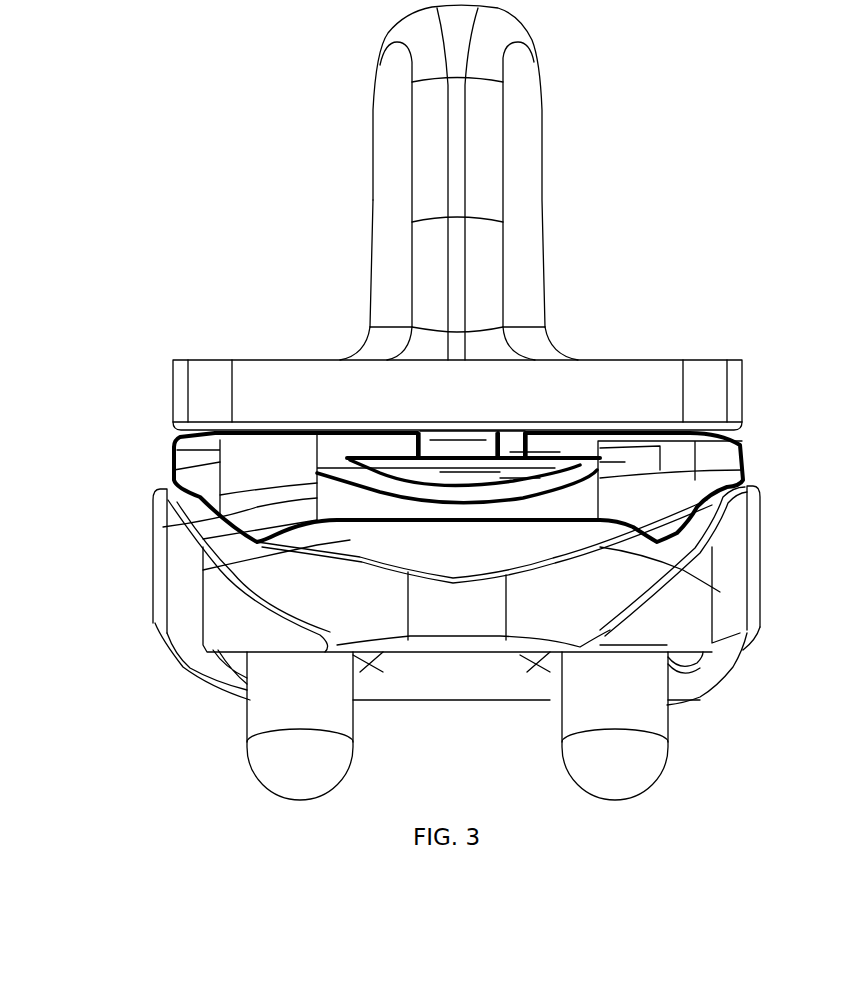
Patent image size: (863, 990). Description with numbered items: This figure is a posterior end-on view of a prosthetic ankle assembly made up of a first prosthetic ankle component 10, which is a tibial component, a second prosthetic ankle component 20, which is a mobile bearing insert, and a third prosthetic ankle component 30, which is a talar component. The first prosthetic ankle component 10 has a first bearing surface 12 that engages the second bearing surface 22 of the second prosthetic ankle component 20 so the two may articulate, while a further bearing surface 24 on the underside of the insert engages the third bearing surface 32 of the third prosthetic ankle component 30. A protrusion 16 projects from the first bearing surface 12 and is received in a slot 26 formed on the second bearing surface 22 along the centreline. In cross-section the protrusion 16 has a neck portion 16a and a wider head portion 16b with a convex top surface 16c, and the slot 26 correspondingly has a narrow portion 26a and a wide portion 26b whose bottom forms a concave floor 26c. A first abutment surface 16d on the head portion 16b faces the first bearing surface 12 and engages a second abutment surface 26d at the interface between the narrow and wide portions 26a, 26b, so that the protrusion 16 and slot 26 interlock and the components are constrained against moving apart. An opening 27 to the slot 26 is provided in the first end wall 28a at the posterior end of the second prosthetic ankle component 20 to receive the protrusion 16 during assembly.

The first prosthetic ankle component 10 is at (483, 142).
The first bearing surface 12 is at (290, 440).
The protrusion 16 is at (683, 155).
The neck portion 16a is at (457, 445).
The head portion 16b is at (468, 477).
The top surface 16c is at (505, 484).
The first abutment surface 16d is at (527, 465).
The second prosthetic ankle component 20 is at (623, 493).
The second bearing surface 22 is at (240, 448).
The further bearing surface 24 is at (645, 518).
The slot 26 is at (82, 455).
The narrow portion 26a is at (172, 473).
The wide portion 26b is at (220, 495).
The floor 26c is at (203, 539).
The second abutment surface 26d is at (203, 570).
The opening 27 is at (668, 422).
The first end wall 28a is at (667, 473).
The third prosthetic ankle component 30 is at (667, 628).
The third bearing surface 32 is at (720, 592).